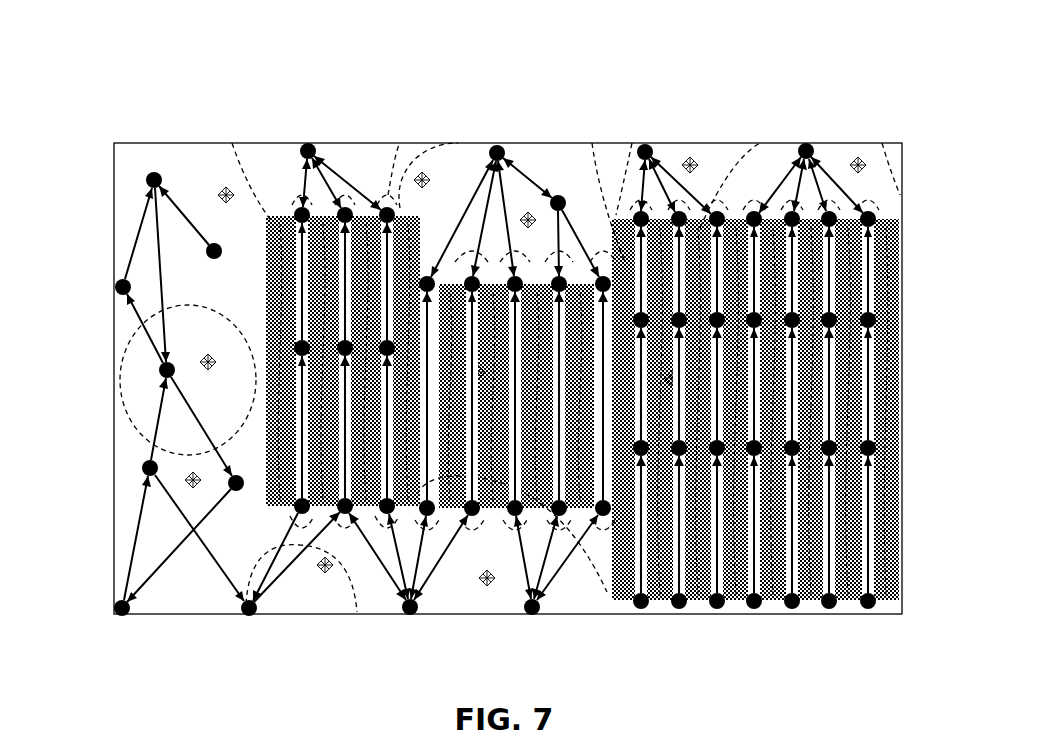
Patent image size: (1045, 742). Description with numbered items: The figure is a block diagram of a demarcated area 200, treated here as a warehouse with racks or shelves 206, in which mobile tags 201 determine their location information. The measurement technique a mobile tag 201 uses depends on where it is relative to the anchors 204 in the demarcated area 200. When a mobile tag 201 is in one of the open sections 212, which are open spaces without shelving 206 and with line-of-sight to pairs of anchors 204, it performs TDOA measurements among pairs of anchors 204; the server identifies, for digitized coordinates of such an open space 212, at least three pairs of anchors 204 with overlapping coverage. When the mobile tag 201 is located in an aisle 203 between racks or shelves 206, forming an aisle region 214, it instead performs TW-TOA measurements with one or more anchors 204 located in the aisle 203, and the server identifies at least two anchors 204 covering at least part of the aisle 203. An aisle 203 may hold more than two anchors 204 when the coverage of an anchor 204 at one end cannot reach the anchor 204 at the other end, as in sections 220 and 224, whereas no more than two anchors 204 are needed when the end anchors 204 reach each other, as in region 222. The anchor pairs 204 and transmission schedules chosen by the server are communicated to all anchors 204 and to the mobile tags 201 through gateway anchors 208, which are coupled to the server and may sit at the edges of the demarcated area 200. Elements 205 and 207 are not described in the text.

The demarcated area 200 is at (808, 52).
The mobile tag 201 is at (157, 146).
The aisle 203 is at (752, 553).
The anchor 204 is at (146, 176).
The node 205 is at (828, 560).
The racks or shelves 206 is at (887, 600).
The node 207 is at (155, 355).
The gateway anchor 208 is at (530, 617).
The open space section 212 is at (217, 148).
The aisle region 214 is at (883, 557).
The section 220 is at (266, 143).
The region 222 is at (421, 143).
The section 224 is at (780, 390).